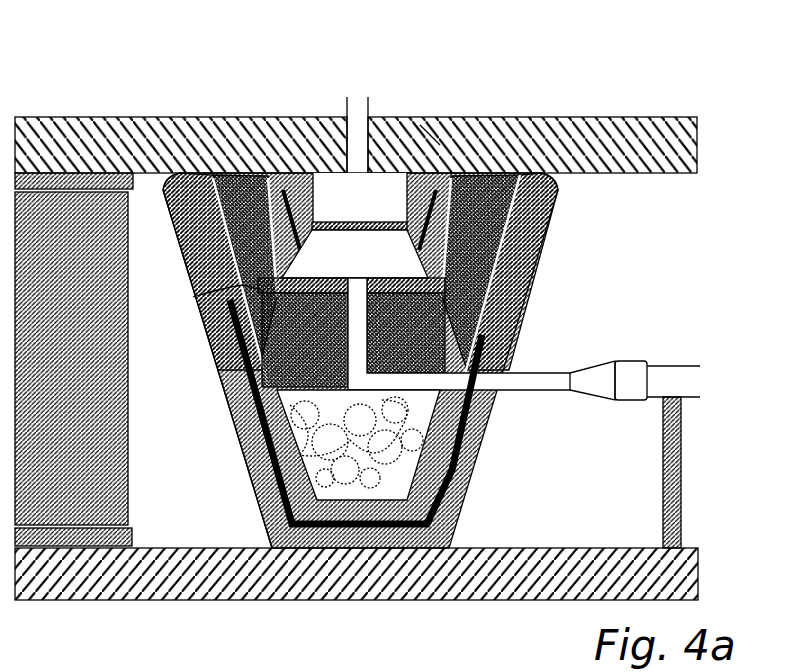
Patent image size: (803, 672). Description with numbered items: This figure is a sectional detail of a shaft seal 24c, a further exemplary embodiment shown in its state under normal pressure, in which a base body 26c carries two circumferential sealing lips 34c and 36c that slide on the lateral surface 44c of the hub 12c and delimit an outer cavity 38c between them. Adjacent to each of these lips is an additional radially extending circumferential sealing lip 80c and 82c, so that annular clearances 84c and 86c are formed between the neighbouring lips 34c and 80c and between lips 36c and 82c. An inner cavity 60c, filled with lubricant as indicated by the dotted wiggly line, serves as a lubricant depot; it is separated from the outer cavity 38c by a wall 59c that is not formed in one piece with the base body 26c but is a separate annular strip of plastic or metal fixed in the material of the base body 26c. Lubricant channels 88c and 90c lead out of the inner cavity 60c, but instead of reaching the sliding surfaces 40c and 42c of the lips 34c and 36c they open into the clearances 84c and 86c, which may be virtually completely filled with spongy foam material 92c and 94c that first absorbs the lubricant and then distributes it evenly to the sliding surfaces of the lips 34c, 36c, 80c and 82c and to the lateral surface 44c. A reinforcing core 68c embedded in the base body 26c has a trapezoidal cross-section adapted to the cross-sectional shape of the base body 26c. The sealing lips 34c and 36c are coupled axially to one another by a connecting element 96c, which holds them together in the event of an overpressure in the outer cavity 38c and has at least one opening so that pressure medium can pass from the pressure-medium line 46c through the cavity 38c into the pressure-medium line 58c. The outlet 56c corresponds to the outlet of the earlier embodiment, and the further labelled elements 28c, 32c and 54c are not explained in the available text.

The hub 12c is at (68, 142).
The shaft seal 24c is at (423, 279).
The base body 26c is at (510, 343).
The lower platen 28c is at (362, 560).
The left slot wall 32c is at (323, 117).
The circumferential sealing lip 34c is at (472, 205).
The circumferential sealing lip 36c is at (255, 185).
The outer cavity 38c is at (383, 238).
The sliding surface 40c is at (470, 165).
The sliding surface 42c is at (308, 182).
The lateral surface 44c is at (676, 180).
The pressure-medium line 46c is at (670, 382).
The injection channel 54c is at (512, 402).
The outlet 56c is at (384, 222).
The pressure-medium line 58c is at (370, 113).
The wall 59c is at (210, 352).
The inner cavity 60c is at (400, 447).
The reinforcing core 68c is at (445, 515).
The additional radially extending circumferential sealing lip 80c is at (566, 222).
The additional radially extending circumferential sealing lip 82c is at (163, 198).
The annular clearance 84c is at (568, 212).
The annular clearance 86c is at (207, 190).
The lubricant channel 88c is at (510, 290).
The lubricant channel 90c is at (208, 300).
The spongy foam material 92c is at (518, 195).
The spongy foam material 94c is at (228, 178).
The connecting element 96c is at (428, 125).